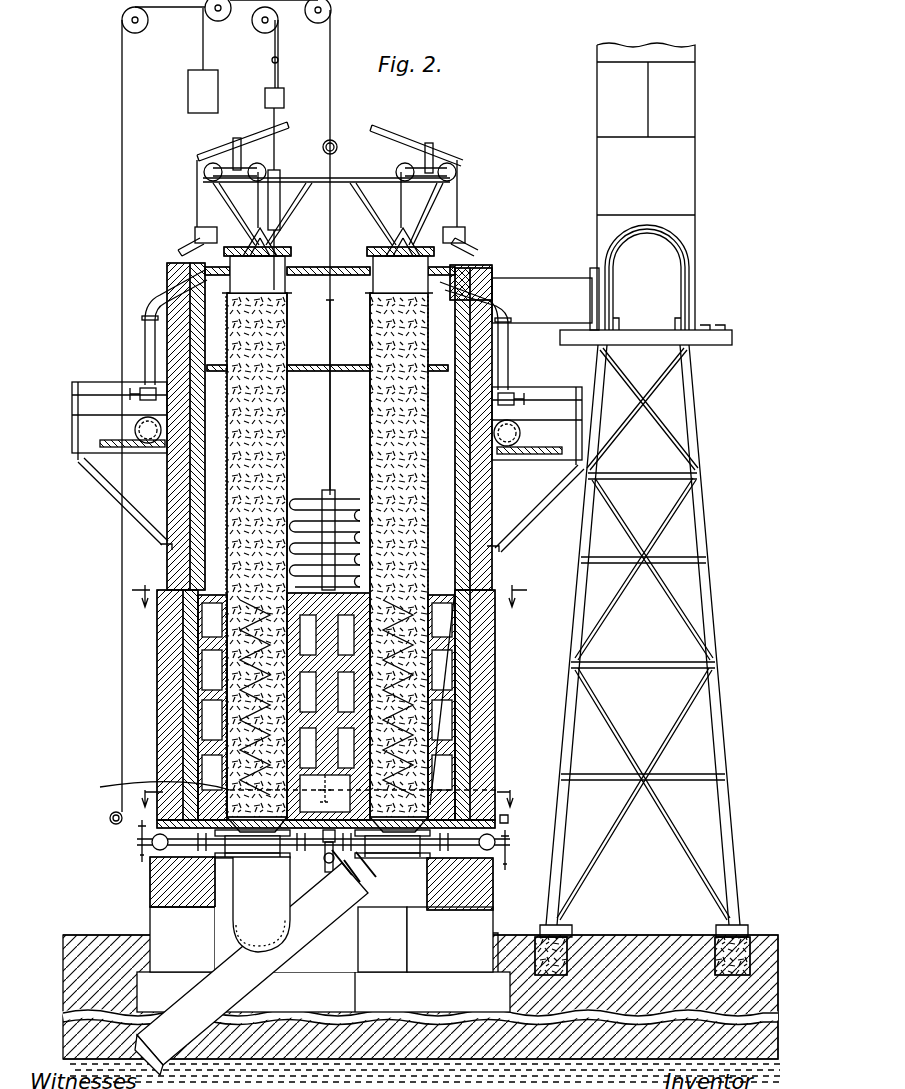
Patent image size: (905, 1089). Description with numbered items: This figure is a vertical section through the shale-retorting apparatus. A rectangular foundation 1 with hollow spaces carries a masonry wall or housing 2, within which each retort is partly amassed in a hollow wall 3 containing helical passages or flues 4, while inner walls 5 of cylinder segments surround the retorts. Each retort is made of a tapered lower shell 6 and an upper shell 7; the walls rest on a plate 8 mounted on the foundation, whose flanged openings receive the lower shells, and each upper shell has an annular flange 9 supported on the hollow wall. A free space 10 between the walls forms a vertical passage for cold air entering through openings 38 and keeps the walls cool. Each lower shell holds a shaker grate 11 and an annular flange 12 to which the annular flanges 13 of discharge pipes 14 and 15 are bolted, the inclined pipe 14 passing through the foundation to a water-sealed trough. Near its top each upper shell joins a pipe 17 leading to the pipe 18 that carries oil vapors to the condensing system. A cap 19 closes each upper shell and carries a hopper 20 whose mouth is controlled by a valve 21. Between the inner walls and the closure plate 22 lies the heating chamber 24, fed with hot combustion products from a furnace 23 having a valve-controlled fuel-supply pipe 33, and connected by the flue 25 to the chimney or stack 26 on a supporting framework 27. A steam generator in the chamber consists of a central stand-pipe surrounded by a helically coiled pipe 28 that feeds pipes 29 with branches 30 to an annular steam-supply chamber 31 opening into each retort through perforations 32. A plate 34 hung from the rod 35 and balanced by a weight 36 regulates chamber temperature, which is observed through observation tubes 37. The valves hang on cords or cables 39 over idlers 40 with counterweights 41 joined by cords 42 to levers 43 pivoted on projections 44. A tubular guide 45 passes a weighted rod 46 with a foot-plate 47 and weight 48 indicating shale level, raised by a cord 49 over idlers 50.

The foundation 1 is at (778, 958).
The wall or housing 2 is at (470, 728).
The hollow wall 3 is at (455, 478).
The helical passages or flues 4 is at (506, 657).
The walls 5 is at (510, 682).
The shell 6 is at (130, 852).
The shell 7 is at (228, 435).
The plate 8 is at (141, 826).
The annular flange 9 is at (470, 575).
The free space 10 is at (430, 555).
The shaker grate 11 is at (235, 855).
The annular flange 12 is at (438, 910).
The annular flange 13 is at (385, 858).
The discharge pipe 14 is at (255, 962).
The discharge pipe 15 is at (251, 904).
The pipe 17 is at (175, 298).
The pipe 18 is at (148, 445).
The cap 19 is at (238, 248).
The hopper 20 is at (290, 230).
The valve 21 is at (262, 258).
The closure plate 22 is at (484, 268).
The furnace 23 is at (325, 855).
The heating chamber 24 is at (328, 556).
The flue 25 is at (540, 290).
The chimney or stack 26 is at (695, 172).
The supporting framework 27 is at (703, 522).
The helically coiled pipe 28 is at (298, 498).
The pipe 29 is at (230, 655).
The branch 30 is at (322, 844).
The annular steam-supply chamber 31 is at (149, 785).
The perforation 32 is at (350, 793).
The fuel-supply pipe 33 is at (110, 815).
The plate 34 is at (355, 372).
The rod 35 is at (332, 322).
The weight 36 is at (195, 110).
The observation tube 37 is at (182, 252).
The opening 38 is at (495, 808).
The cord or cable 39 is at (258, 198).
The idler 40 is at (257, 165).
The counterweight 41 is at (196, 228).
The cord 42 is at (197, 175).
The lever 43 is at (250, 138).
The projection 44 is at (236, 140).
The tubular guide 45 is at (278, 175).
The weighted rod 46 is at (280, 140).
The foot-plate 47 is at (288, 268).
The weight 48 is at (284, 100).
The cord 49 is at (120, 645).
The idler 50 is at (140, 25).